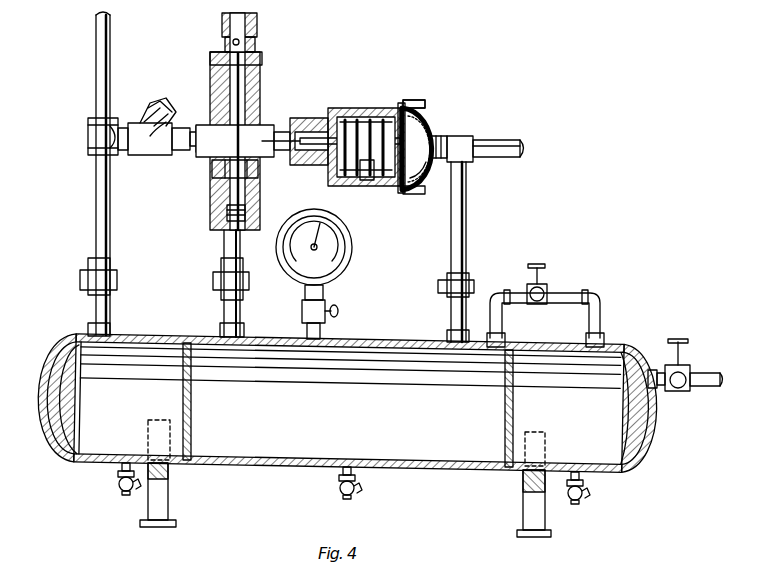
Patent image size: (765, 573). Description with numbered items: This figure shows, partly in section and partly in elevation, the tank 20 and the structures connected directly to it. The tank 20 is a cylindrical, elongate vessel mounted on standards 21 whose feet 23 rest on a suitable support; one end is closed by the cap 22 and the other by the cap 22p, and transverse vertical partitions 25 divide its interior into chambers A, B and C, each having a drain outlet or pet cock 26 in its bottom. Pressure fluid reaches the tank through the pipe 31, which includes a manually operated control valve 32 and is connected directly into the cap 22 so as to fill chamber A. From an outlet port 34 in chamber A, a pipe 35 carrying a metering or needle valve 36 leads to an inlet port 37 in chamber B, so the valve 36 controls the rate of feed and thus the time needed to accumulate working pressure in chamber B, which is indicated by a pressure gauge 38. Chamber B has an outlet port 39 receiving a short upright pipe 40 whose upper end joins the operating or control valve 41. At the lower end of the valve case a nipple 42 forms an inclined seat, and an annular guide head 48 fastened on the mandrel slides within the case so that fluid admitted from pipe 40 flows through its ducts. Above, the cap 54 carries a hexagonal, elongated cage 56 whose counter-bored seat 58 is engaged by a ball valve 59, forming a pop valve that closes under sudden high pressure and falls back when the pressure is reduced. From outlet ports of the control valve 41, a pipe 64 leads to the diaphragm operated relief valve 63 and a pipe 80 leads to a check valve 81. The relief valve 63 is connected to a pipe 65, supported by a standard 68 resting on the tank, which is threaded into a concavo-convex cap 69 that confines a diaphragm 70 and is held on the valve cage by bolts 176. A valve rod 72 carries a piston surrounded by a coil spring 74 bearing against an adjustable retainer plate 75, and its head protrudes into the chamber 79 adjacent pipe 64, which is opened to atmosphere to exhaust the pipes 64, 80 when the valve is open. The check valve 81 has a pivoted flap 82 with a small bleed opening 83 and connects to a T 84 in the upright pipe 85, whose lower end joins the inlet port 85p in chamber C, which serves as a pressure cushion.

The tank 20 is at (364, 346).
The standards 21 is at (169, 488).
The cap 22 is at (656, 433).
The cap 22p is at (47, 401).
The feet 23 is at (190, 500).
The partitions 25 is at (192, 408).
The pet cock 26 is at (118, 484).
The pipe 31 is at (712, 375).
The control valve 32 is at (684, 364).
The outlet port 34 is at (605, 341).
The pipe 35 is at (503, 316).
The metering valve 36 is at (547, 287).
The inlet port 37 is at (506, 339).
The pressure gauge 38 is at (351, 250).
The outlet port 39 is at (246, 332).
The upright pipe 40 is at (245, 308).
The control valve 41 is at (258, 100).
The nipple 42 is at (212, 222).
The guide head 48 is at (224, 173).
The cap 54 is at (212, 64).
The cage 56 is at (222, 26).
The seat 58 is at (242, 14).
The ball valve 59 is at (248, 44).
The relief valve 63 is at (408, 100).
The pipe 64 is at (282, 132).
The pipe 65 is at (500, 140).
The standard 68 is at (467, 248).
The cap 69 is at (424, 127).
The diaphragm 70 is at (423, 175).
The valve rod 72 is at (348, 118).
The coil spring 74 is at (368, 180).
The retainer plate 75 is at (356, 116).
The chamber 79 is at (304, 162).
The pipe 80 is at (201, 126).
The check valve 81 is at (178, 158).
The flap 82 is at (150, 160).
The bleed opening 83 is at (136, 158).
The T 84 is at (90, 135).
The upright pipe 85 is at (96, 70).
The inlet port 85p is at (108, 332).
The bolts 176 is at (413, 108).
The chamber A is at (596, 456).
The chamber B is at (404, 440).
The chamber C is at (96, 424).